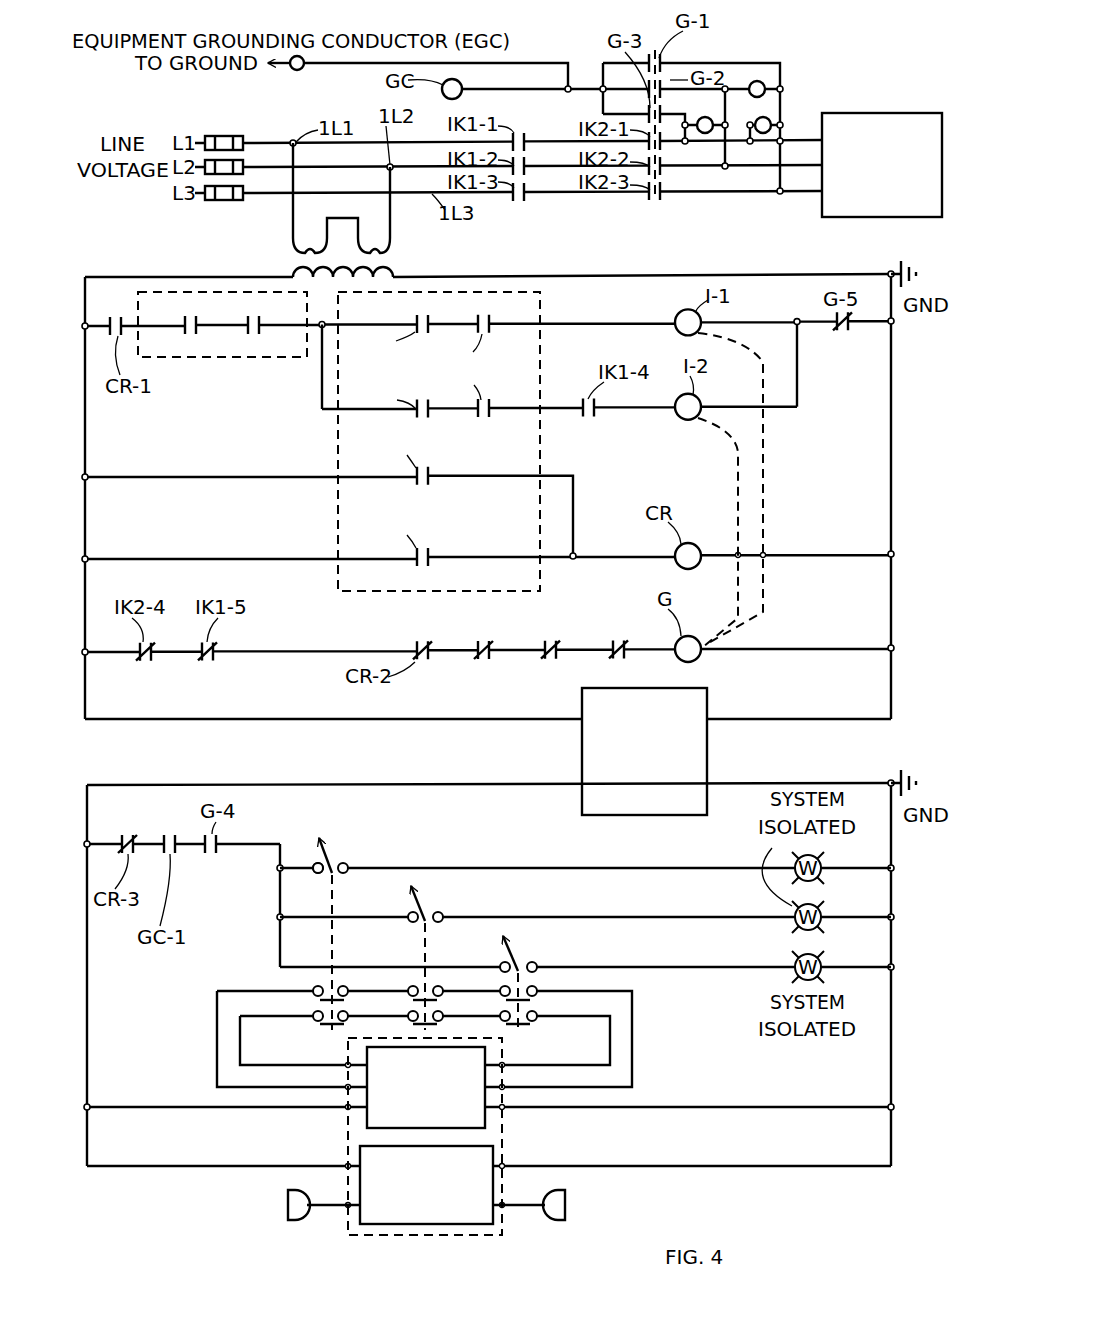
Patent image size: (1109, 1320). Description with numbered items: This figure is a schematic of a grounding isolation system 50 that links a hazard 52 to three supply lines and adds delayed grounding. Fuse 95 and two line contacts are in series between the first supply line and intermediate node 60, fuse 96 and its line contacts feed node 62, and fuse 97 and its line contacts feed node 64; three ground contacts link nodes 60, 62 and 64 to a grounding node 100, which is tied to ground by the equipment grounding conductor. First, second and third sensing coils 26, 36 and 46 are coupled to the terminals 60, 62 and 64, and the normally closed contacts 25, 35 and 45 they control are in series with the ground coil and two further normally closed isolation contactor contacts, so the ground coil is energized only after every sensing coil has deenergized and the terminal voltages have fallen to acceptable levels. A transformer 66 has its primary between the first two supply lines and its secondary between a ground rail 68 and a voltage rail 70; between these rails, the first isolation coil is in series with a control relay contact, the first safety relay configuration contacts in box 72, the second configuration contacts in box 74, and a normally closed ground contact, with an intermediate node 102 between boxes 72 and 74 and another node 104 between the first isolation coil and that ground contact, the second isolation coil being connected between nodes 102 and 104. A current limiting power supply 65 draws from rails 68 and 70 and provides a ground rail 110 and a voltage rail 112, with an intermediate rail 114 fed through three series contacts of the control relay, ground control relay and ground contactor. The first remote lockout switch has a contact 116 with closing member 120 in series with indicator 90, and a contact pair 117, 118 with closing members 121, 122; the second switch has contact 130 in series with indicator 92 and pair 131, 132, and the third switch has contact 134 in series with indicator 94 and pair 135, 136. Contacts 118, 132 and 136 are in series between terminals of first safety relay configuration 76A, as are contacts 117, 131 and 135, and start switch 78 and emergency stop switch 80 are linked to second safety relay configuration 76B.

The isolation system 50 is at (752, 42).
The hazard 52 is at (850, 113).
The second sensing coil 36 is at (766, 85).
The third sensing coil 46 is at (771, 118).
The first sensing coil 26 is at (700, 117).
The intermediate node 60 is at (670, 192).
The intermediate node 62 is at (725, 168).
The intermediate node 64 is at (778, 193).
The transformer 66 is at (290, 250).
The voltage rail 70 is at (85, 290).
The ground rail 68 is at (893, 405).
The box of first safety relay configuration output contacts 72 is at (542, 338).
The box of second safety relay configuration output contacts 74 is at (250, 358).
The fuse 95 is at (230, 135).
The fuse 96 is at (245, 165).
The fuse 97 is at (231, 201).
The grounding node 100 is at (567, 64).
The intermediate node 102 is at (319, 331).
The intermediate node 104 is at (800, 326).
The current limiting power supply 65 is at (702, 690).
The first NC contact 25 is at (480, 661).
The second NC contact 35 is at (550, 661).
The third NC contact 45 is at (618, 640).
The ground rail 110 is at (893, 838).
The voltage rail 112 is at (88, 1058).
The intermediate rail 114 is at (280, 942).
The contact 116 is at (346, 860).
The contact 117 is at (324, 1020).
The contact 118 is at (325, 989).
The closing member 120 is at (318, 876).
The closing member 121 is at (238, 1064).
The closing member 122 is at (340, 999).
The contact 130 is at (442, 907).
The contact 131 is at (340, 1025).
The contact 132 is at (430, 989).
The contact 134 is at (530, 958).
The contact 135 is at (526, 1022).
The contact 136 is at (530, 989).
The indicator 90 is at (822, 863).
The indicator 92 is at (822, 912).
The indicator 94 is at (822, 962).
The first safety relay configuration 76A is at (348, 1120).
The second safety relay configuration 76B is at (348, 1218).
The start button or switch 78 is at (288, 1194).
The ES switch 80 is at (565, 1196).